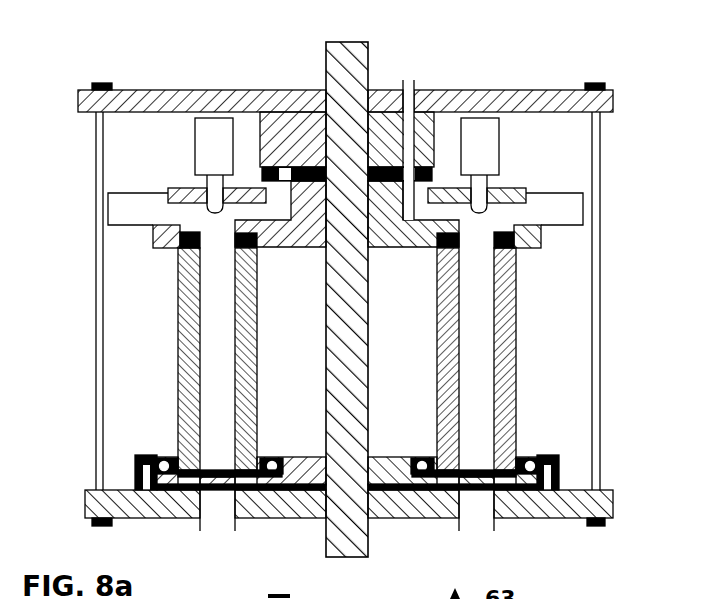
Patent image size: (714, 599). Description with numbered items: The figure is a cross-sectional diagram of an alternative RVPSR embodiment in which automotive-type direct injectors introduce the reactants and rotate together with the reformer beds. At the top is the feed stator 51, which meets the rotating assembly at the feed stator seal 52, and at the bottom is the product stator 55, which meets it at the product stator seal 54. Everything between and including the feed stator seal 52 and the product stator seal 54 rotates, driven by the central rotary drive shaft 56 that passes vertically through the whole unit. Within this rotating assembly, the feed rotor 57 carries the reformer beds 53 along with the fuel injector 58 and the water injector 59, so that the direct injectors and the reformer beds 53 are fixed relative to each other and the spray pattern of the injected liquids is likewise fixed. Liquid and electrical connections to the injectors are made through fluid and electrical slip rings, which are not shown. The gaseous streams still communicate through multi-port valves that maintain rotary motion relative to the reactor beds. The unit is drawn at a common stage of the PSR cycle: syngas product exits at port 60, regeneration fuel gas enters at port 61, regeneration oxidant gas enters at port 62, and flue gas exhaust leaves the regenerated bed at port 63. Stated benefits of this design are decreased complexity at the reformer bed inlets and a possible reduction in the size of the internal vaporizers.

The feed stator 51 is at (517, 89).
The feed stator seal 52 is at (424, 181).
The reformer beds 53 is at (258, 362).
The product stator seal 54 is at (387, 455).
The product stator 55 is at (154, 519).
The rotary drive shaft 56 is at (326, 44).
The feed rotor 57 is at (171, 252).
The fuel injector 58 is at (140, 192).
The water injector 59 is at (197, 139).
The port 60 is at (217, 494).
The port 61 is at (548, 478).
The port 62 is at (478, 498).
The port 63 is at (408, 100).